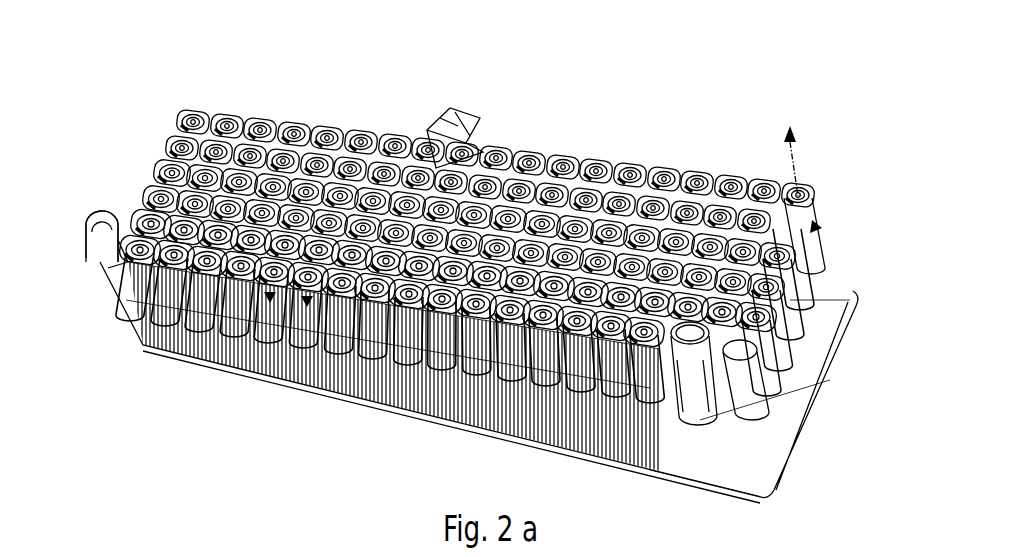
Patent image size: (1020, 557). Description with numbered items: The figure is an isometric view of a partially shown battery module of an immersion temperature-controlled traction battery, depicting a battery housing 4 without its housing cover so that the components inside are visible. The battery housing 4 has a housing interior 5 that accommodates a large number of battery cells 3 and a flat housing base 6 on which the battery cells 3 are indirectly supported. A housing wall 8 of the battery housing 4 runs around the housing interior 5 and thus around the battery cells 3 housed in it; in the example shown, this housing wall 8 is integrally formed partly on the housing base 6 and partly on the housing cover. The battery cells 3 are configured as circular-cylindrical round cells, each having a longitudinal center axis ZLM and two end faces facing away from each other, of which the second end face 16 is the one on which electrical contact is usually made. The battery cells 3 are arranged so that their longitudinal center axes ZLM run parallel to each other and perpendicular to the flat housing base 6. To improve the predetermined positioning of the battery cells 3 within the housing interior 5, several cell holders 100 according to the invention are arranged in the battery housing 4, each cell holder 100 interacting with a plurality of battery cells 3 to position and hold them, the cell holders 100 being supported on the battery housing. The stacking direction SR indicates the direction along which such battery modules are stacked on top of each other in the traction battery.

The battery cell 3 is at (343, 124).
The battery housing 4 is at (158, 415).
The housing interior 5 is at (816, 227).
The housing base 6 is at (128, 352).
The housing wall 8 is at (808, 352).
The second end face 16 is at (803, 190).
The cell holder 100 is at (578, 150).
The stacking direction SR is at (786, 122).
The longitudinal center axis ZLM is at (793, 160).